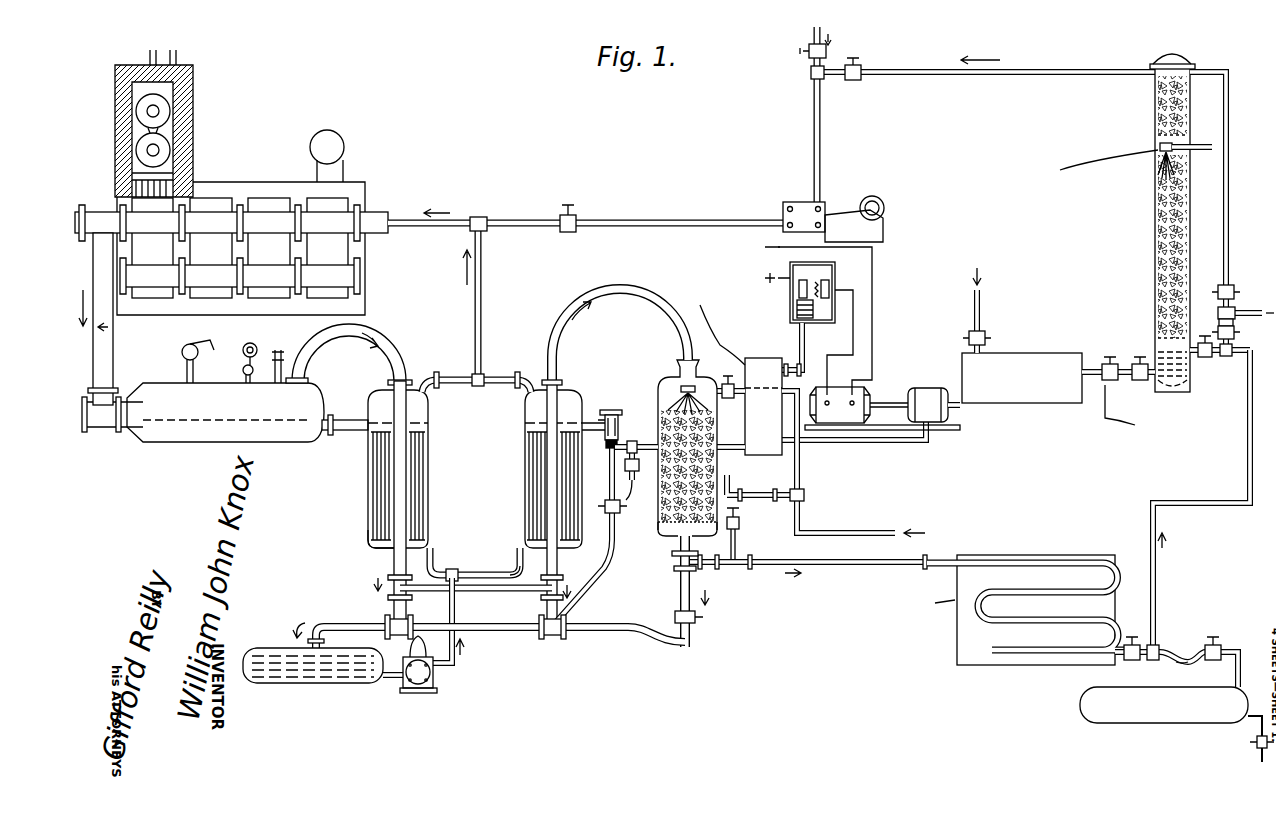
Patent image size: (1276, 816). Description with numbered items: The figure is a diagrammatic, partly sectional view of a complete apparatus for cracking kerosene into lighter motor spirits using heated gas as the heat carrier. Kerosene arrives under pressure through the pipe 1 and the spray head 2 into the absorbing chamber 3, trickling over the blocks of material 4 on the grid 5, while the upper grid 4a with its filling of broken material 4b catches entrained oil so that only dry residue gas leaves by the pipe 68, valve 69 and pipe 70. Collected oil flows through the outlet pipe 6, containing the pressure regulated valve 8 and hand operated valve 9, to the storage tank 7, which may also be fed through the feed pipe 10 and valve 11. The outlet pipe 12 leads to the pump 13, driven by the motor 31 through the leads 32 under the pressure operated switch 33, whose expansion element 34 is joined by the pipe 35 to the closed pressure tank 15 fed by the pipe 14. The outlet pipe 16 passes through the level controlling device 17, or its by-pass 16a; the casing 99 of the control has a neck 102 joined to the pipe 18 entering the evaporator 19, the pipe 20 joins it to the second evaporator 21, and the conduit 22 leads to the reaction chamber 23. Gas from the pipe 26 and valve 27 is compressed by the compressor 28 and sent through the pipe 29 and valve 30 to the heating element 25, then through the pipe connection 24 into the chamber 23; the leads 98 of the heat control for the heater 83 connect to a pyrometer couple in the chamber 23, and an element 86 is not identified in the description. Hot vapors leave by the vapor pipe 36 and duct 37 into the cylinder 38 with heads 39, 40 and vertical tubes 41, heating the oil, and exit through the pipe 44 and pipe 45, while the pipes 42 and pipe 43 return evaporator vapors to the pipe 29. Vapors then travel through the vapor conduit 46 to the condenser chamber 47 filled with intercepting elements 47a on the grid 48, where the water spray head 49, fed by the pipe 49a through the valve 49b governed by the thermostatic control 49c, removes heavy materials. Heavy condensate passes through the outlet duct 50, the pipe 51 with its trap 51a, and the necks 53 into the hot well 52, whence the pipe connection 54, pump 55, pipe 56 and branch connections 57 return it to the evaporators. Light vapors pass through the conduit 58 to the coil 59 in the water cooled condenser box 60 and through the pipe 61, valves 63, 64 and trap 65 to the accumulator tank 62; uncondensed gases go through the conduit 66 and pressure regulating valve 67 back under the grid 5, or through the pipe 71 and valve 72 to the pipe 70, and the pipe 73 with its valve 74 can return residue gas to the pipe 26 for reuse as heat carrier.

The pipe 1 is at (1200, 145).
The spray head 2 is at (1158, 140).
The absorbing chamber 3 is at (1150, 222).
The blocks of material 4 is at (1158, 300).
The grid 4a is at (1158, 134).
The filling of broken material 4b is at (1158, 92).
The grid 5 is at (1155, 345).
The outlet pipe 6 is at (1122, 380).
The storage tank 7 is at (1036, 352).
The pressure regulated valve 8 is at (1105, 382).
The hand operated valve 9 is at (1142, 382).
The feed pipe 10 is at (975, 298).
The hand operated valve 11 is at (985, 338).
The outlet pipe 12 is at (960, 408).
The pump 13 is at (925, 390).
The pipe 14 is at (920, 445).
The pressure tank 15 is at (725, 365).
The outlet pipe 16 is at (728, 450).
The by-pass 16a is at (610, 518).
The level controlling device 17 is at (610, 470).
The pipe 18 is at (611, 410).
The evaporator 19 is at (525, 430).
The outlet pipe 20 is at (512, 575).
The second evaporator 21 is at (368, 500).
The conduit 22 is at (345, 418).
The reaction chamber 23 is at (250, 444).
The pipe connection 24 is at (113, 360).
The heating element 25 is at (245, 312).
The pipe 26 is at (812, 33).
The hand operated valve 27 is at (808, 55).
The compressor 28 is at (795, 205).
The pipe 29 is at (648, 220).
The valve 30 is at (576, 212).
The motor 31 is at (843, 425).
The leads 32 is at (858, 316).
The pressure operated switch 33 is at (797, 285).
The expansion element 34 is at (812, 318).
The pipe 35 is at (800, 342).
The outlet vapor pipe 36 is at (338, 338).
The duct 37 is at (388, 380).
The cylinder 38 is at (372, 455).
The head 39 is at (428, 424).
The head 40 is at (370, 548).
The vertical tubes 41 is at (412, 468).
The pipes 42 is at (455, 377).
The pipe 43 is at (482, 300).
The pipe 44 is at (445, 568).
The pipe 45 is at (438, 590).
The vapor conduit 46 is at (603, 300).
The condenser chamber 47 is at (678, 380).
The intercepting elements 47a is at (655, 440).
The grid 48 is at (670, 540).
The water spray head 49 is at (692, 388).
The pipe 49a is at (820, 538).
The valve 49b is at (805, 495).
The thermostatic control 49c is at (742, 523).
The outlet duct 50 is at (674, 570).
The pipe 51 is at (612, 638).
The trap 51a is at (675, 618).
The hot well 52 is at (278, 683).
The necks 53 is at (388, 612).
The pipe connection 54 is at (398, 680).
The pump 55 is at (433, 675).
The pipe 56 is at (462, 612).
The branch connections 57 is at (462, 562).
The conduit 58 is at (805, 560).
The coil 59 is at (1040, 563).
The condenser box 60 is at (1038, 668).
The pipe 61 is at (1168, 650).
The accumulator tank 62 is at (1135, 725).
The valve 63 is at (1135, 642).
The valve 64 is at (1216, 642).
The trap 65 is at (1186, 664).
The conduit 66 is at (1158, 590).
The pressure regulating valve 67 is at (1207, 358).
The pipe 68 is at (1228, 210).
The valve 69 is at (1232, 280).
The pipe 70 is at (1252, 312).
The pipe 71 is at (1218, 322).
The valve 72 is at (1218, 334).
The pipe 73 is at (1075, 75).
The valve 74 is at (858, 82).
The heater 83 is at (170, 112).
The stack 86 is at (344, 147).
The leads 98 is at (282, 354).
The casing 99 is at (622, 410).
The neck 102 is at (606, 444).